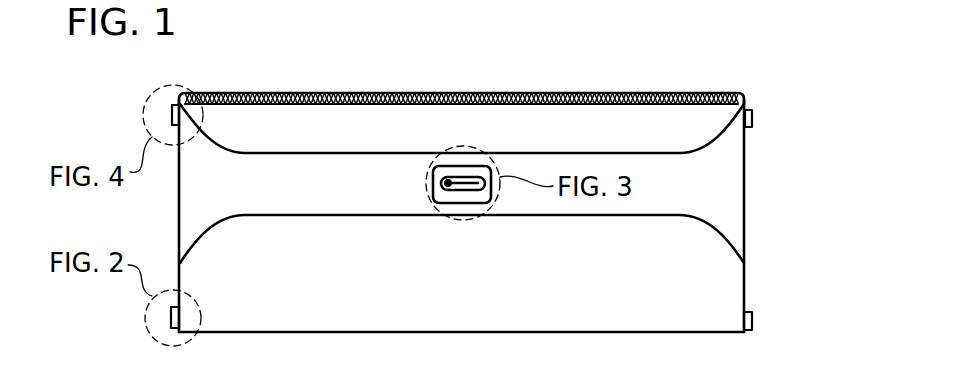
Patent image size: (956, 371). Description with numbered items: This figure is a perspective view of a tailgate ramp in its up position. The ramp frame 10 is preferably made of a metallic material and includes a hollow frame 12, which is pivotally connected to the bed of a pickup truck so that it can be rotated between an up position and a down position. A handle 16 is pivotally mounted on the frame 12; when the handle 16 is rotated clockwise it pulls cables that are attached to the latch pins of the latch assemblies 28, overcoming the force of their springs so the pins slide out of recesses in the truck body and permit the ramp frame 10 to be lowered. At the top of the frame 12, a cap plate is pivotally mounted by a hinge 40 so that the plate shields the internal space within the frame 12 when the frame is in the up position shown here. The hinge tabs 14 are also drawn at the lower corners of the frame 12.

The ramp frame 10 is at (482, 72).
The hollow frame 12 is at (744, 273).
The lower hinge tabs 14 is at (180, 308).
The handle 16 is at (470, 188).
The latch assembly 28 is at (172, 115).
The hinge 40 is at (280, 92).